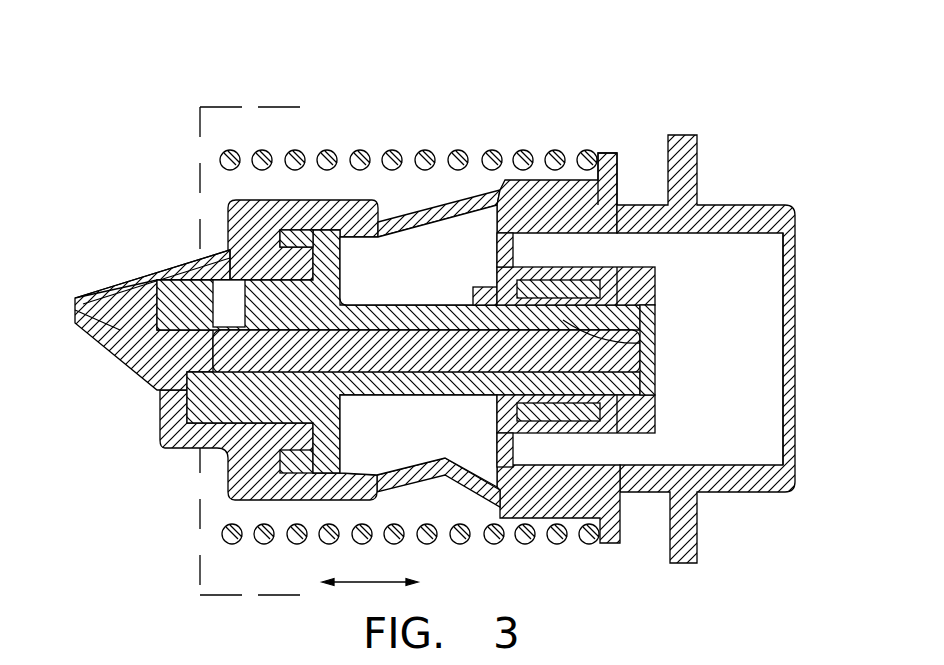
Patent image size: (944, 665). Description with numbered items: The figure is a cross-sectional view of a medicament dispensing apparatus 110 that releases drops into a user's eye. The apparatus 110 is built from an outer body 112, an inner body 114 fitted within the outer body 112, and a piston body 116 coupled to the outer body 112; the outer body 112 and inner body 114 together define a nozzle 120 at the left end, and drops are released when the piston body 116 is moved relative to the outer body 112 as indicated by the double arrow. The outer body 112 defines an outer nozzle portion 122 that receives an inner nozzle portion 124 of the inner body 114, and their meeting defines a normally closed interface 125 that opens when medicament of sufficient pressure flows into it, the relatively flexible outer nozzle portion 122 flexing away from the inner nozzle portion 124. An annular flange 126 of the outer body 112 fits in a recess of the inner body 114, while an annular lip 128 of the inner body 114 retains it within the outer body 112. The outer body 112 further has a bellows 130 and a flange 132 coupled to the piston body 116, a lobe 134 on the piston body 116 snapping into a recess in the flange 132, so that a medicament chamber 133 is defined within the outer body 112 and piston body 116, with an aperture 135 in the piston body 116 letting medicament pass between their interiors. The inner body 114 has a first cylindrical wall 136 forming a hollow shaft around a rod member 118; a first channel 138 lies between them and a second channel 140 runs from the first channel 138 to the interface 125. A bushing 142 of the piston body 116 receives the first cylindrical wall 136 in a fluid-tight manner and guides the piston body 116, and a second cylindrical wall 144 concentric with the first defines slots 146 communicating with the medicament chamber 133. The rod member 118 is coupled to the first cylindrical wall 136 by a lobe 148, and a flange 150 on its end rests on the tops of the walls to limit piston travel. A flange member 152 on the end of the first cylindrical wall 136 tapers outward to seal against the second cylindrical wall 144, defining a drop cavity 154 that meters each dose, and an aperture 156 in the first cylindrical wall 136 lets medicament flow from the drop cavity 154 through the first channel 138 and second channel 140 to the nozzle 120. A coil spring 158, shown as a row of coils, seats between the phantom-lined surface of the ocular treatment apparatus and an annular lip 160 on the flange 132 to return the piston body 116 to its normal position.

The apparatus 110 is at (462, 78).
The outer body 112 is at (307, 200).
The inner body 114 is at (180, 430).
The piston body 116 is at (722, 205).
The rod member 118 is at (350, 340).
The nozzle 120 is at (73, 297).
The outer nozzle portion 122 is at (126, 278).
The inner nozzle portion 124 is at (120, 323).
The interface 125 is at (93, 294).
The annular flange 126 is at (300, 478).
The annular lip 128 is at (343, 238).
The bellows 130 is at (470, 197).
The flange 132 is at (575, 178).
The medicament chamber 133 is at (780, 340).
The lobe 134 is at (570, 518).
The aperture 135 is at (507, 250).
The first cylindrical wall 136 is at (377, 400).
The first channel 138 is at (418, 441).
The second channel 140 is at (223, 297).
The bushing 142 is at (470, 290).
The second cylindrical wall 144 is at (495, 470).
The slots 146 is at (650, 277).
The lobe 148 is at (600, 317).
The flange 150 is at (650, 428).
The flange member 152 is at (645, 297).
The drop cavity 154 is at (582, 277).
The aperture 156 is at (640, 343).
The coil spring 158 is at (418, 150).
The annular lip 160 is at (613, 153).